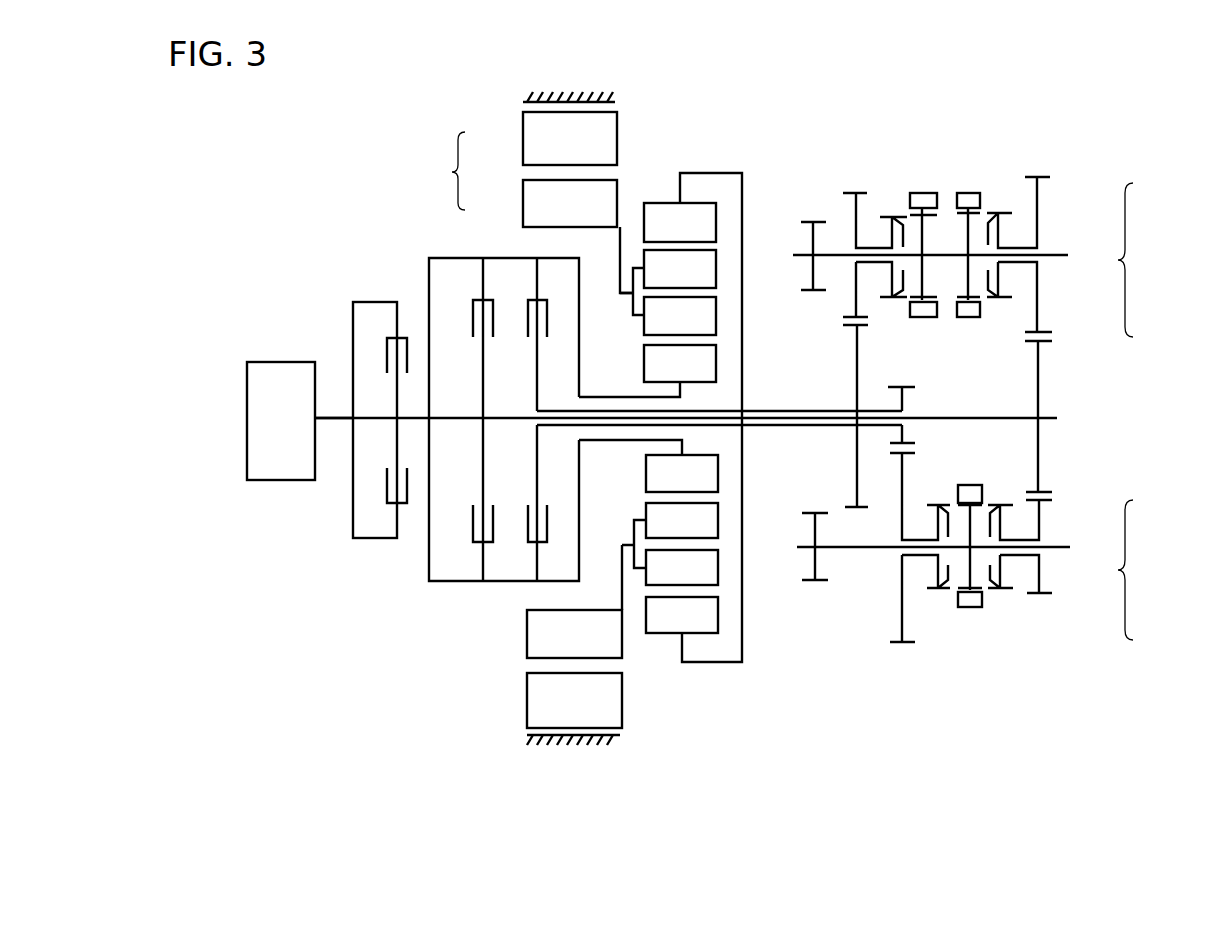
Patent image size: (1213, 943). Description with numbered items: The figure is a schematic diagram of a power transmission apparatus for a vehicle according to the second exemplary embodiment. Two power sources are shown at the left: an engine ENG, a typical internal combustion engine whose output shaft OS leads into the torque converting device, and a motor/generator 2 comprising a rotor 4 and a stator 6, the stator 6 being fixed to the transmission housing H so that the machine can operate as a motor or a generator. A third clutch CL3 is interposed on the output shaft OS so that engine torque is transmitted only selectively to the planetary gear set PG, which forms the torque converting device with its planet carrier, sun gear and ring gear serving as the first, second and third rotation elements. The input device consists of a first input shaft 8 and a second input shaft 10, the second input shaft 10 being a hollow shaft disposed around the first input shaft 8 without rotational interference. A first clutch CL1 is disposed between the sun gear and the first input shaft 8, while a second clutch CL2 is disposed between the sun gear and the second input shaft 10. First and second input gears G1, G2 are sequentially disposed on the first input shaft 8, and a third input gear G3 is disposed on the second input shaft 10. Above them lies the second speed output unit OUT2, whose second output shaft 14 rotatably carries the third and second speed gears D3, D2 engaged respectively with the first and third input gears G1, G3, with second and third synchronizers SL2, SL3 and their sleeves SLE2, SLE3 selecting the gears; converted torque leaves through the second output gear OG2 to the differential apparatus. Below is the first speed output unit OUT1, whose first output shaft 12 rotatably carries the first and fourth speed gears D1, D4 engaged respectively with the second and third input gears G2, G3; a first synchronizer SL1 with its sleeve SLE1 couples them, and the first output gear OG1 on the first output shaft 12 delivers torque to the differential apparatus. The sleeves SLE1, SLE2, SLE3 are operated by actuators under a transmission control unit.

The engine ENG is at (281, 421).
The output shaft OS is at (334, 414).
The third clutch CL3 is at (380, 420).
The second clutch CL2 is at (468, 419).
The first clutch CL1 is at (551, 419).
The motor/generator 2 is at (451, 171).
The stator 6 is at (522, 135).
The rotor 4 is at (522, 203).
The transmission housing H is at (589, 92).
The planetary gear set PG is at (717, 162).
The first input shaft 8 is at (784, 408).
The second input shaft 10 is at (766, 429).
The second output shaft 14 is at (1055, 259).
The first output shaft 12 is at (1058, 545).
The second speed output unit OUT2 is at (1156, 260).
The first speed output unit OUT1 is at (1156, 570).
The second output gear OG2 is at (812, 236).
The first output gear OG1 is at (813, 563).
The third speed gear D3 is at (854, 200).
The second speed gear D2 is at (1040, 186).
The first speed gear D1 is at (901, 614).
The fourth speed gear D4 is at (1043, 572).
The first input gear G1 is at (856, 370).
The second input gear G2 is at (905, 396).
The third input gear G3 is at (1041, 372).
The first synchronizer SL1 is at (936, 644).
The second synchronizer SL2 is at (1011, 166).
The third synchronizer SL3 is at (870, 166).
The first sleeve SLE1 is at (968, 614).
The second sleeve SLE2 is at (967, 182).
The third sleeve SLE3 is at (917, 182).